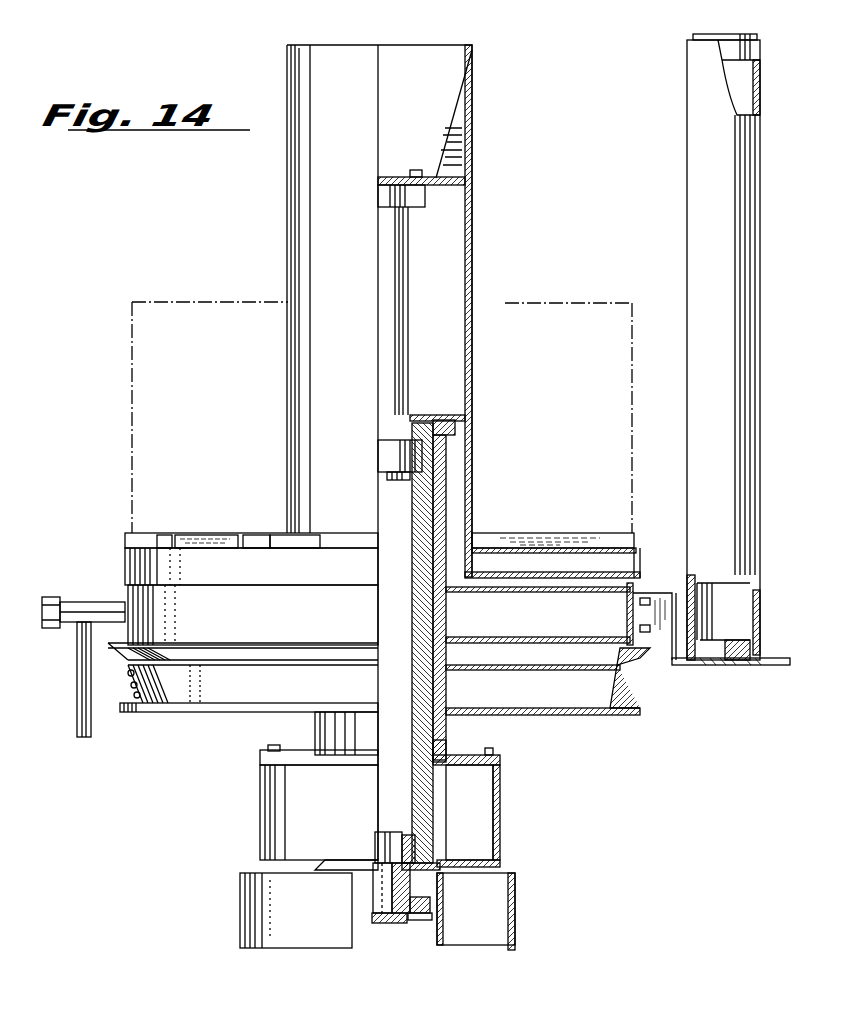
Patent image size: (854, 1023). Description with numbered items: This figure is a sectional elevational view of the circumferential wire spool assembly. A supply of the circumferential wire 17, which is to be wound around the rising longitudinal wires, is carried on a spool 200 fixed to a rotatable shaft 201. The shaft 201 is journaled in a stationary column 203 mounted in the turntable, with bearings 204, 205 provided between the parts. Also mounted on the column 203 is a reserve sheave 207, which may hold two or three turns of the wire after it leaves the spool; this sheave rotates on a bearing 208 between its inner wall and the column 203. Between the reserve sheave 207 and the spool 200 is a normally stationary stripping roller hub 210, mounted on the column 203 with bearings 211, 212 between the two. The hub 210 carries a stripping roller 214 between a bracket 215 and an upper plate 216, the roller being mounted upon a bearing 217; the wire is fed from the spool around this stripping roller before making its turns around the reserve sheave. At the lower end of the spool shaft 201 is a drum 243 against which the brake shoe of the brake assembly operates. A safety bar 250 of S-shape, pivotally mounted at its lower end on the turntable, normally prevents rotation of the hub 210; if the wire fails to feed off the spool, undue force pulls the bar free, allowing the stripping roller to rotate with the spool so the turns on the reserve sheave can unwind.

The circumferential wire 17 is at (131, 405).
The spool 200 is at (473, 232).
The rotatable shaft 201 is at (406, 280).
The stationary column 203 is at (433, 512).
The bearing 204 is at (432, 853).
The bearing 205 is at (422, 452).
The reserve sheave 207 is at (205, 712).
The bearing 208 is at (441, 722).
The stripping roller hub 210 is at (303, 628).
The bearing 211 is at (446, 488).
The bearing 212 is at (441, 625).
The stripping roller 214 is at (720, 430).
The bracket 215 is at (770, 665).
The upper plate 216 is at (742, 33).
The bearing 217 is at (735, 655).
The drum 243 is at (293, 945).
The bar 250 is at (84, 740).